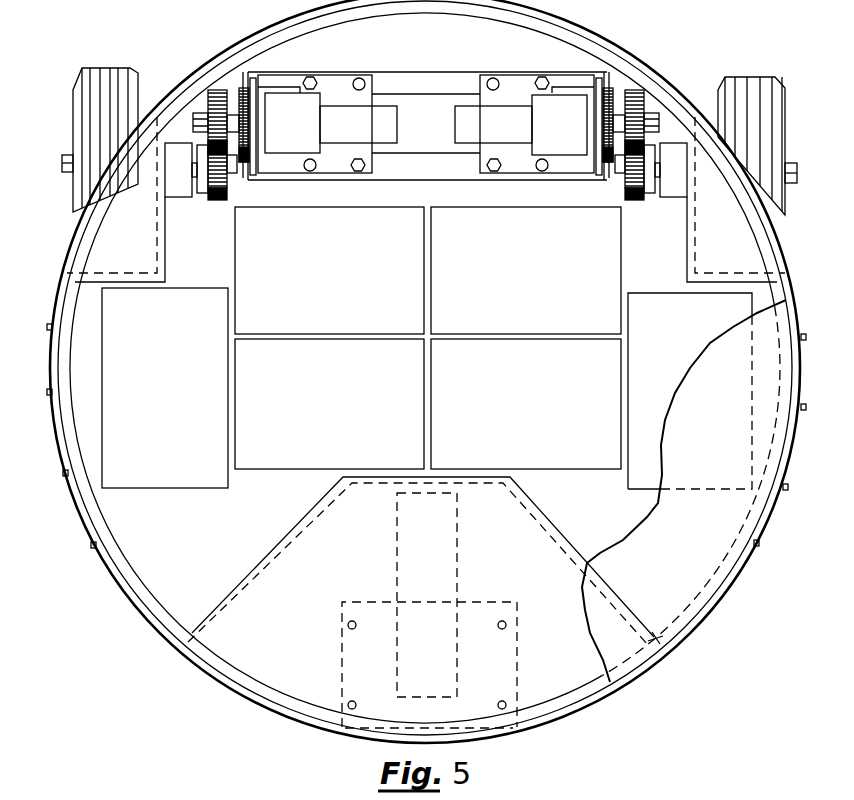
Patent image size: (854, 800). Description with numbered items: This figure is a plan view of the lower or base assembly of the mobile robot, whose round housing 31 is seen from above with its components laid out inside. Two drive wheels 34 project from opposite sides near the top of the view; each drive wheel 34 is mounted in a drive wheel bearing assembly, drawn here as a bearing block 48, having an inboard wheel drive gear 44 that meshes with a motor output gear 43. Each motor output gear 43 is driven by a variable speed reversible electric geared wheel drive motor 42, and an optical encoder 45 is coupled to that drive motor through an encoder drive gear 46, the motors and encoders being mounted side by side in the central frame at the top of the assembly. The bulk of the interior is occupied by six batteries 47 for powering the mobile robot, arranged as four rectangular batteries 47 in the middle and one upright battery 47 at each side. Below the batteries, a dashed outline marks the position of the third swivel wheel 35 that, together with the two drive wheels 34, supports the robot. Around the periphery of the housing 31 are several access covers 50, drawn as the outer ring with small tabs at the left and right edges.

The housing 31 is at (712, 612).
The drive wheel 34 is at (97, 68).
The swivel wheel 35 is at (457, 545).
The wheel drive motor 42 is at (335, 139).
The motor output gear 43 is at (213, 92).
The inboard wheel drive gear 44 is at (213, 200).
The optical encoder 45 is at (276, 139).
The encoder drive gear 46 is at (244, 72).
The battery 47 is at (147, 372).
The bearing block 48 is at (175, 153).
The access cover 50 is at (80, 512).